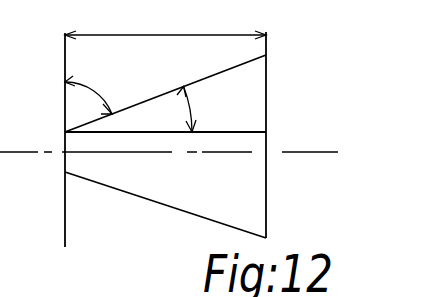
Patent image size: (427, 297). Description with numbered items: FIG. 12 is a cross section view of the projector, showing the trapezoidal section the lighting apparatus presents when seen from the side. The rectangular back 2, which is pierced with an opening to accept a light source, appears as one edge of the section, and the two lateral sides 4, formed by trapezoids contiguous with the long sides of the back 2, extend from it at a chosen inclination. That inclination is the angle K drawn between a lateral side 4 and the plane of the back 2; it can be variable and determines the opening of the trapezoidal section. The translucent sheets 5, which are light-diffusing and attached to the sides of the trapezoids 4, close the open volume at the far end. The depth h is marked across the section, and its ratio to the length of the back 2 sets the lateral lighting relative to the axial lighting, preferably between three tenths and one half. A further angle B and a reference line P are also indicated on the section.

The back 2 is at (63, 162).
The lateral sides 4 is at (153, 97).
The translucent sheets 5 is at (258, 182).
The depth h is at (165, 22).
The angle B is at (91, 90).
The angle K is at (198, 110).
The reference plane line P is at (243, 130).